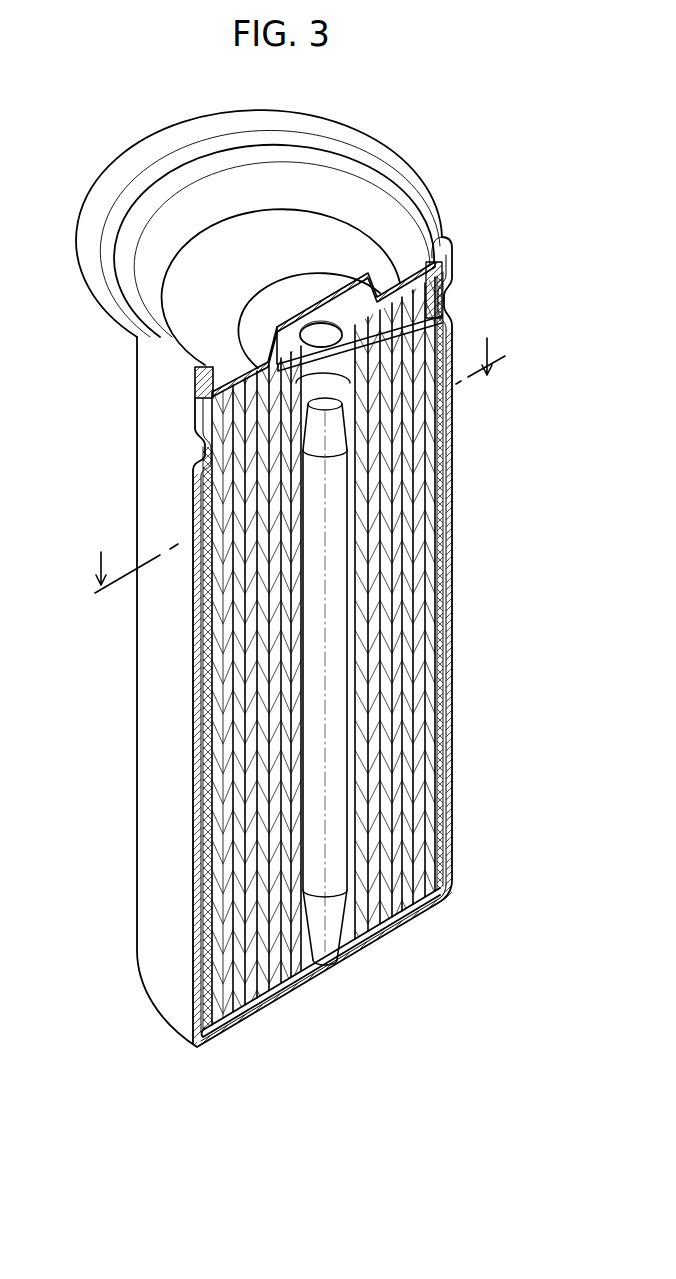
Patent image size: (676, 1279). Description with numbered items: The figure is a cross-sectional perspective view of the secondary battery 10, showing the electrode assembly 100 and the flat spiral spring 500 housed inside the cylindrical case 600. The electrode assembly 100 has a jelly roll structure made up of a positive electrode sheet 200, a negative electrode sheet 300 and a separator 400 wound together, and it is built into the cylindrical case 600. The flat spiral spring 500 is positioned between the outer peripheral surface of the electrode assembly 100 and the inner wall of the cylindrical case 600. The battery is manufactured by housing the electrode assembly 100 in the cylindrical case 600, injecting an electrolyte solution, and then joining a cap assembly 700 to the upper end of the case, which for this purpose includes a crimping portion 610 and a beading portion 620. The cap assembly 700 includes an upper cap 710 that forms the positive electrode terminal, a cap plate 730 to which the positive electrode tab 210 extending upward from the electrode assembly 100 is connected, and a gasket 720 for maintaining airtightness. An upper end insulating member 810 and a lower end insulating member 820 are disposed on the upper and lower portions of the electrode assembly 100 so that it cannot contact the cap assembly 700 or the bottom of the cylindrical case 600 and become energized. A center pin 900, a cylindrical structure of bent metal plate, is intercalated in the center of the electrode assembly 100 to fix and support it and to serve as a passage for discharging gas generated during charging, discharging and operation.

The secondary battery 10 is at (200, 154).
The electrode assembly 100 is at (303, 651).
The positive electrode sheet 200 is at (448, 888).
The positive electrode tab 210 is at (213, 404).
The negative electrode sheet 300 is at (429, 912).
The separator 400 is at (332, 651).
The flat spiral spring 500 is at (440, 572).
The cylindrical case 600 is at (453, 617).
The crimping portion 610 is at (151, 291).
The beading portion 620 is at (197, 438).
The cap assembly 700 is at (369, 297).
The upper cap 710 is at (383, 280).
The gasket 720 is at (433, 262).
The cap plate 730 is at (403, 316).
The upper end insulating member 810 is at (430, 345).
The lower end insulating member 820 is at (258, 1020).
The center pin 900 is at (323, 722).